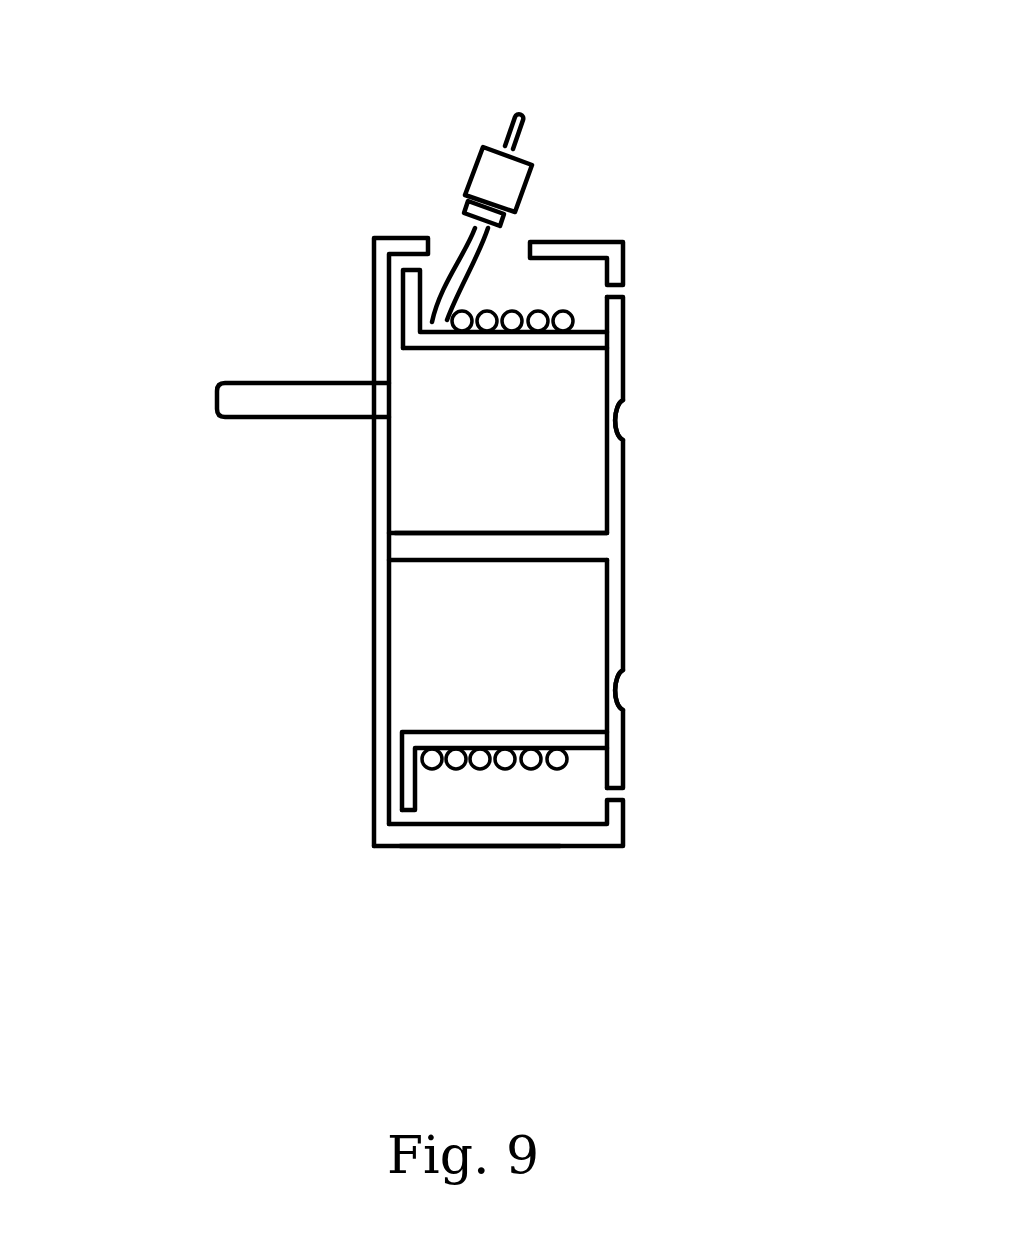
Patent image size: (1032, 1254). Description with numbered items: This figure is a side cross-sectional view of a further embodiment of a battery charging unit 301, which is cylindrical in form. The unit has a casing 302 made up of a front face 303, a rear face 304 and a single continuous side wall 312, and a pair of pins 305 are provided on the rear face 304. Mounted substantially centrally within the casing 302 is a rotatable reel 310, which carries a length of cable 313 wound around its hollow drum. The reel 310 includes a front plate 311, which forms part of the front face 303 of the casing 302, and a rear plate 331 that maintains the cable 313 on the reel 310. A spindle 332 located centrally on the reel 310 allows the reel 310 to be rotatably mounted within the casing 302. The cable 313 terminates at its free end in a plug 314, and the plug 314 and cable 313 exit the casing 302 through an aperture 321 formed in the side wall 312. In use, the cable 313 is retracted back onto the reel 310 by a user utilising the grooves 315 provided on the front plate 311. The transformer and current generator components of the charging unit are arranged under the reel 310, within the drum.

The battery charging unit 301 is at (730, 163).
The casing 302 is at (568, 844).
The front face 303 is at (623, 263).
The rear face 304 is at (368, 625).
The pins 305 is at (253, 403).
The rotatable reel 310 is at (547, 737).
The front plate 311 is at (618, 493).
The side wall 312 is at (437, 844).
The cable 313 is at (483, 768).
The plug 314 is at (490, 182).
The grooves 315 is at (617, 418).
The aperture 321 is at (512, 247).
The rear plate 331 is at (410, 305).
The spindle 332 is at (447, 542).